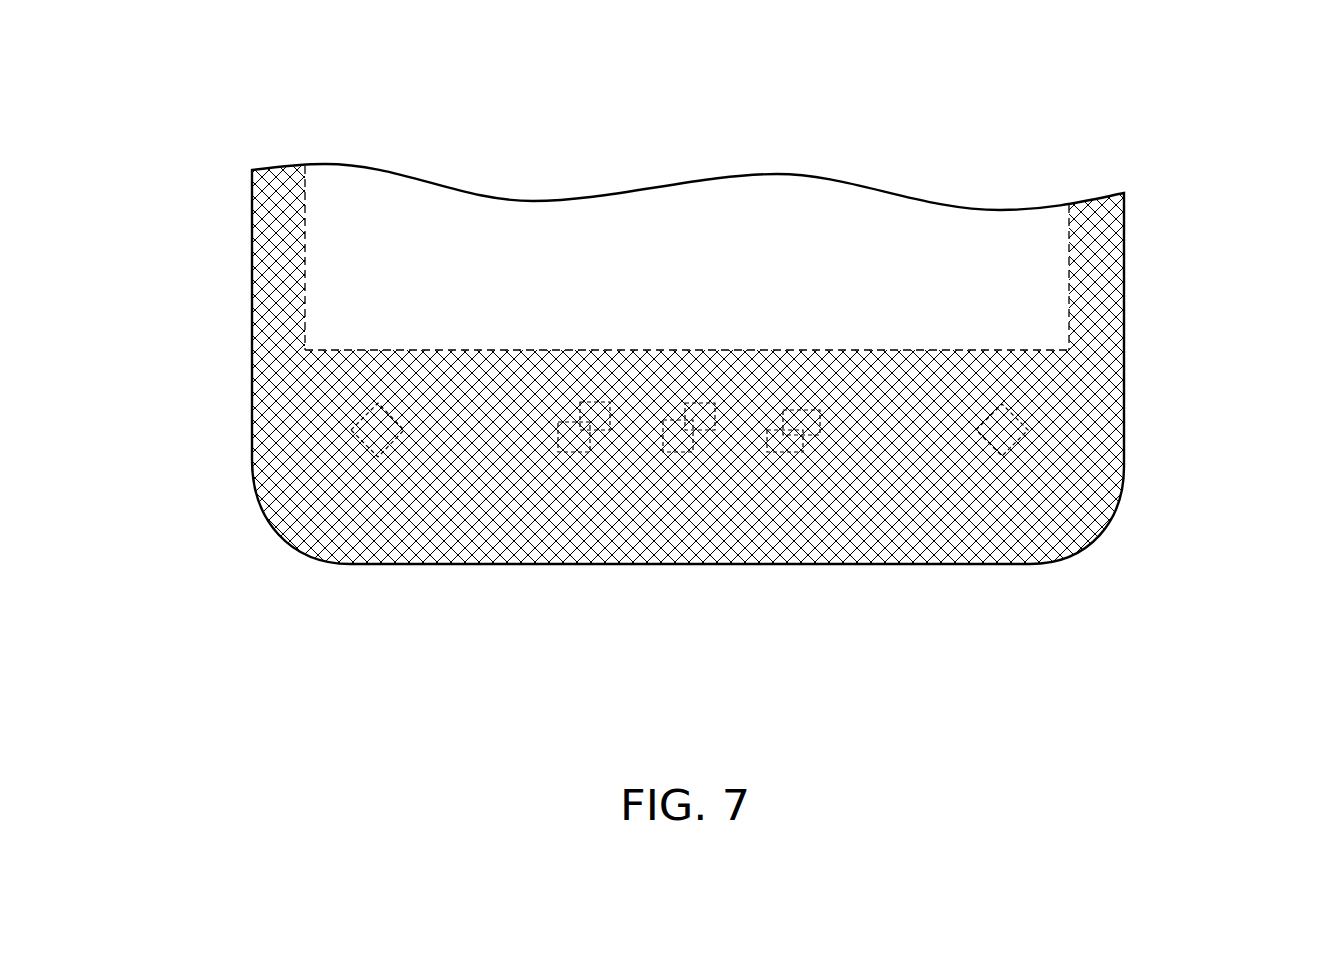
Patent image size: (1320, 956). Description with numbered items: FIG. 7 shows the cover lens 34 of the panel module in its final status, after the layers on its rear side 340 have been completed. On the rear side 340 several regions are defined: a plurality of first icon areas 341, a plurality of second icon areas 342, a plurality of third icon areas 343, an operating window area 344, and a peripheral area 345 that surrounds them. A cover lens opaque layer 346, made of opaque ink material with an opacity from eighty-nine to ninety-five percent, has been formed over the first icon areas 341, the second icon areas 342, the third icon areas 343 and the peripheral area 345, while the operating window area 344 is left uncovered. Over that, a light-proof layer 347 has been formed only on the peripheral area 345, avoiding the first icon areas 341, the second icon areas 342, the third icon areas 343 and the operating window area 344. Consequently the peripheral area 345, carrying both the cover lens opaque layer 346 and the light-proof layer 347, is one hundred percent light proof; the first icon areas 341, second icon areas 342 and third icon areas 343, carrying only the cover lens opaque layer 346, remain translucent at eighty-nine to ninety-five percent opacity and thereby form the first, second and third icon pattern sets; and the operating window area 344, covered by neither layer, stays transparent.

The cover lens 34 is at (1118, 112).
The rear side 340 is at (1103, 268).
The first icon areas 341 is at (688, 408).
The second icon areas 342 is at (583, 408).
The third icon areas 343 is at (386, 426).
The operating window area 344 is at (342, 265).
The peripheral area 345 is at (287, 343).
The cover lens opaque layer 346 is at (285, 447).
The light-proof layer 347 is at (287, 515).